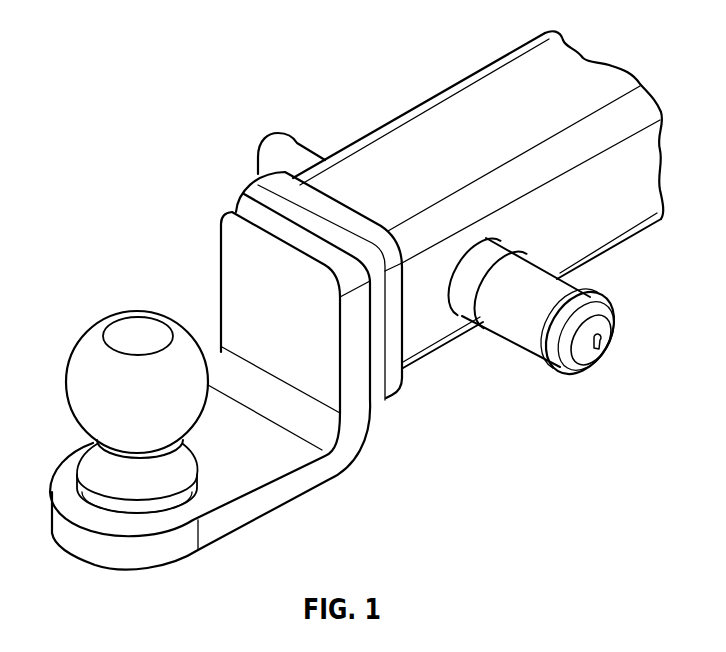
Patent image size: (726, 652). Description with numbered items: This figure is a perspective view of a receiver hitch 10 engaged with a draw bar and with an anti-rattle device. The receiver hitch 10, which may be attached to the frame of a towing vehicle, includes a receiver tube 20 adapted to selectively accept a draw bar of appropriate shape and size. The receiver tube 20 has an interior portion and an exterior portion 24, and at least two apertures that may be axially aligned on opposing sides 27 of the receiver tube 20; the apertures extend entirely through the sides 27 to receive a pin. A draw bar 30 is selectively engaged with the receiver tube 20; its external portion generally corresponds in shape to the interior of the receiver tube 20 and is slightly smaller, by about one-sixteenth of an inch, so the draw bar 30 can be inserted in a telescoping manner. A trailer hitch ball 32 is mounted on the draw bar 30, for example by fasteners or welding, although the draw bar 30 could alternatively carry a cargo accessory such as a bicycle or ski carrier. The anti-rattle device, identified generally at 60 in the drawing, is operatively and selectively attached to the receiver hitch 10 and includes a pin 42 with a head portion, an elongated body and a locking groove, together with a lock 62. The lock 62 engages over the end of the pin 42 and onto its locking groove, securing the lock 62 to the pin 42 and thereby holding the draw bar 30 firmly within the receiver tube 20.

The receiver hitch 10 is at (114, 119).
The receiver tube 20 is at (454, 68).
The exterior portion 24 is at (583, 75).
The sides 27 is at (588, 216).
The draw bar 30 is at (369, 491).
The trailer hitch ball 32 is at (82, 386).
The pin 42 is at (272, 147).
The locking system 60 is at (310, 113).
The lock 62 is at (508, 325).